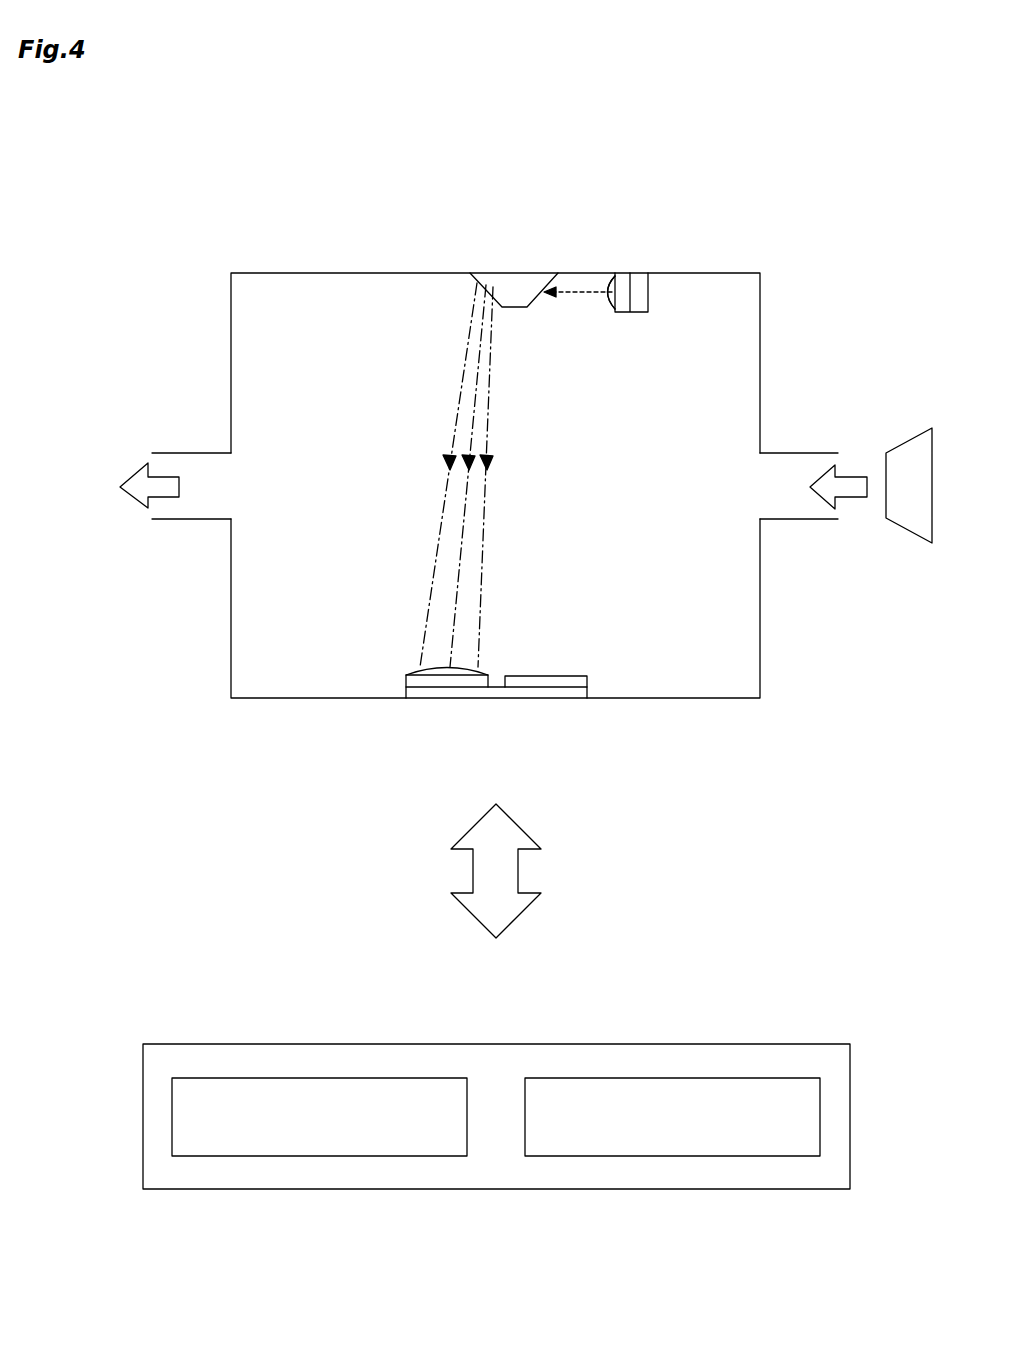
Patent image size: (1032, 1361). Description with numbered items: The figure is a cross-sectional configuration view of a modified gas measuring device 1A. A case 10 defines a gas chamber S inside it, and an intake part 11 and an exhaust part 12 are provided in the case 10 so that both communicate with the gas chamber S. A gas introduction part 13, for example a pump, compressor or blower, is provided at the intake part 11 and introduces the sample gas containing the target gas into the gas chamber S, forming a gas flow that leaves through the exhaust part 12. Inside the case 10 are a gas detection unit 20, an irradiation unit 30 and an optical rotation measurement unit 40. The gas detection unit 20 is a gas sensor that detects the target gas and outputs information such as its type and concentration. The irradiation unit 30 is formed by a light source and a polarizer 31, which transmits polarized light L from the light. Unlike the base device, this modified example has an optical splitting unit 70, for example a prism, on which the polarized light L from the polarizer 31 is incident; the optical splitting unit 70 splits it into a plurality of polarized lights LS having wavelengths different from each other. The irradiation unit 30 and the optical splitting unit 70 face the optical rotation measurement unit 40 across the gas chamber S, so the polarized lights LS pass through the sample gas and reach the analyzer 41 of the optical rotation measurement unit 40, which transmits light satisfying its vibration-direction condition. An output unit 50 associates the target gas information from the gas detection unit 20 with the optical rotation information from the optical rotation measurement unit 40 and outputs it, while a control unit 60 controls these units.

The gas measuring device 1A is at (754, 187).
The case 10 is at (727, 272).
The intake part 11 is at (800, 452).
The exhaust part 12 is at (173, 452).
The gas introduction part 13 is at (904, 445).
The gas detection unit 20 is at (560, 676).
The irradiation unit 30 is at (655, 294).
The polarizer 31 is at (604, 284).
The optical rotation measurement unit 40 is at (406, 682).
The analyzer 41 is at (420, 672).
The output unit 50 is at (412, 1157).
The control unit 60 is at (776, 1157).
The optical splitting unit 70 is at (468, 281).
The polarized light L is at (578, 290).
The polarized lights LS is at (442, 420).
The gas chamber S is at (292, 283).